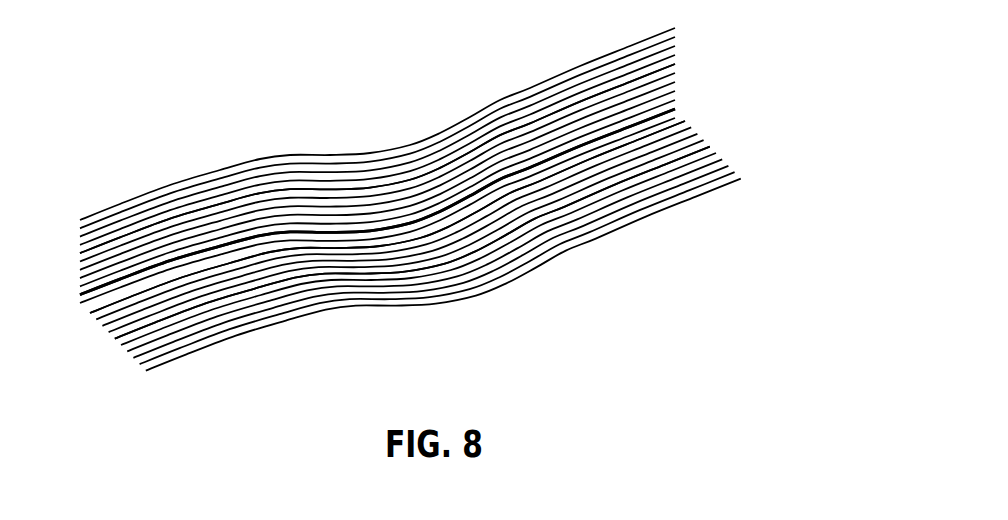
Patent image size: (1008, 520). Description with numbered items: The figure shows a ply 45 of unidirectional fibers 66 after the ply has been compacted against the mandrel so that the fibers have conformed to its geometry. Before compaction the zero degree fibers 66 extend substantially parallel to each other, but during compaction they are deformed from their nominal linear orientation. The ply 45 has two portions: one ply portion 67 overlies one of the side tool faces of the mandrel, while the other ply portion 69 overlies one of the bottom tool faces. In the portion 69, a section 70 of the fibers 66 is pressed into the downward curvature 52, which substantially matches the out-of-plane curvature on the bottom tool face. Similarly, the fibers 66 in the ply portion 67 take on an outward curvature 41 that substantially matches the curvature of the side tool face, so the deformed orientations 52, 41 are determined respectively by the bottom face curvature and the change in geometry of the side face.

The outward curvature 41 is at (459, 158).
The ply 45 is at (702, 92).
The downward curvature 52 is at (492, 242).
The unidirectional fibers 66 is at (207, 287).
The ply portion 67 is at (72, 220).
The ply portion 69 is at (150, 373).
The section of the fibers 70 is at (588, 252).